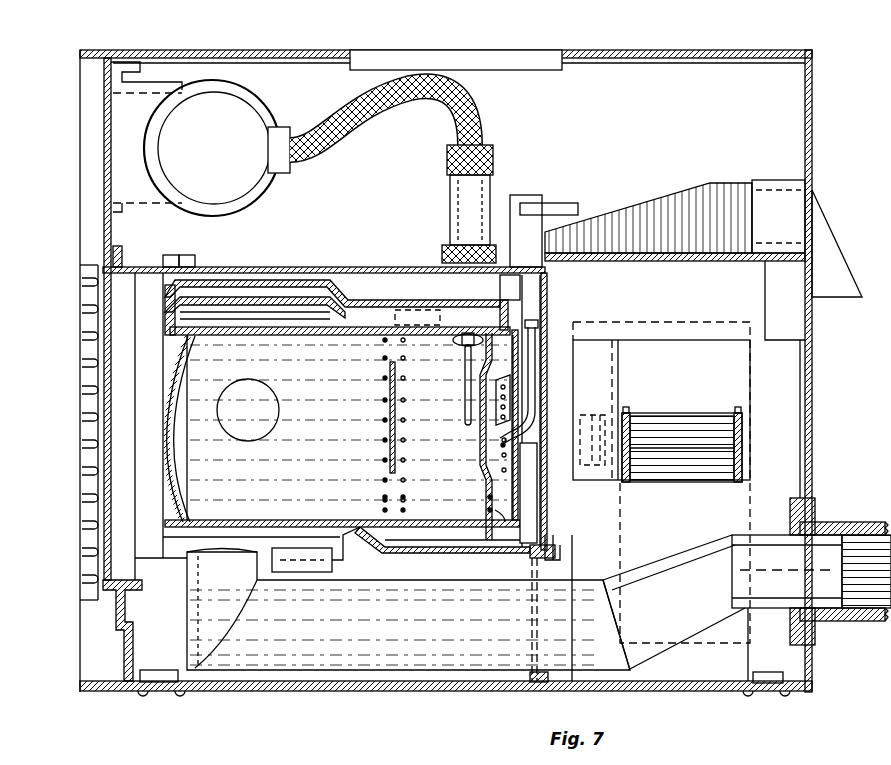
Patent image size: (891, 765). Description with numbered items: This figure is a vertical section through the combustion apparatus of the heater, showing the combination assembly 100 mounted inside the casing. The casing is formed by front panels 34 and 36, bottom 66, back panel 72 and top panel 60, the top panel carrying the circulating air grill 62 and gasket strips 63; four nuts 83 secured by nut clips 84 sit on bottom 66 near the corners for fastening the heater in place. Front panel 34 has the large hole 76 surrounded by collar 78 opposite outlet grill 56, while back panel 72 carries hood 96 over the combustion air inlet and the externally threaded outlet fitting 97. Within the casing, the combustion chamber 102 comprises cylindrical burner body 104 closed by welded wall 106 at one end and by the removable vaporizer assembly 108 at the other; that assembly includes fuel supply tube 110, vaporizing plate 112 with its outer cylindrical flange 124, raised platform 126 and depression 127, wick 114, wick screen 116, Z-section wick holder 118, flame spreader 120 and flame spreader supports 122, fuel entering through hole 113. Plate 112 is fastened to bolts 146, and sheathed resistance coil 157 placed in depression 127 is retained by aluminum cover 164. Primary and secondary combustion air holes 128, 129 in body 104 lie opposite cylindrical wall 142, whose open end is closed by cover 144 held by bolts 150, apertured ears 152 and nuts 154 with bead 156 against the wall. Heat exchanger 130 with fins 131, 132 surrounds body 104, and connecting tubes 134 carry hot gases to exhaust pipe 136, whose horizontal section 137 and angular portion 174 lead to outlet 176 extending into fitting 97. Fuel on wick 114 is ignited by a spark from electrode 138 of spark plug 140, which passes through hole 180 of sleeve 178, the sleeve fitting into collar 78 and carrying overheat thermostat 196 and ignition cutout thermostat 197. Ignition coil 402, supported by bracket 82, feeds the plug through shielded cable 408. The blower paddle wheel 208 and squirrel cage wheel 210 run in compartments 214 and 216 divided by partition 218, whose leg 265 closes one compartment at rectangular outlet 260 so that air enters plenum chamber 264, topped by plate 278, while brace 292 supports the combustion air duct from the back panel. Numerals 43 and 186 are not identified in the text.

The front panel 34 is at (104, 157).
The front panel 36 is at (132, 656).
The control box 43 is at (338, 548).
The outlet grill 56 is at (93, 593).
The top panel 60 is at (235, 50).
The circulating air grill 62 is at (448, 60).
The gasket strips 63 is at (80, 66).
The bottom 66 is at (270, 693).
The back panel 72 is at (808, 382).
The large hole 76 is at (82, 272).
The collar 78 is at (120, 248).
The ignition coil bracket 82 is at (152, 84).
The nuts 83 is at (775, 673).
The nut clips 84 is at (788, 698).
The hood 96 is at (847, 262).
The flanged outlet fitting 97 is at (832, 520).
The combination assembly 100 is at (378, 267).
The combustion chamber 102 is at (359, 303).
The burner body 104 is at (281, 335).
The welded wall 106 is at (185, 368).
The vaporizer assembly 108 is at (556, 477).
The fuel supply tube 110 is at (548, 330).
The vaporizing plate 112 is at (520, 287).
The hole 113 is at (488, 432).
The wick 114 is at (495, 412).
The wick screen 116 is at (470, 380).
The wick holder 118 is at (490, 470).
The flame spreader 120 is at (388, 447).
The flame spreader supports 122 is at (450, 318).
The outer cylindrical flange 124 is at (462, 553).
The raised platform 126 is at (458, 450).
The depression 127 is at (507, 382).
The primary combustion air holes 128 is at (490, 504).
The secondary combustion air holes 129 is at (390, 365).
The heat exchanger 130 is at (282, 297).
The fins 131 is at (175, 320).
The fins 132 is at (238, 280).
The connecting tubes 134 is at (254, 438).
The exhaust pipe 136 is at (192, 607).
The horizontal section 137 is at (305, 648).
The electrode 138 is at (465, 420).
The spark plug 140 is at (458, 203).
The cylindrical wall 142 is at (418, 553).
The cover 144 is at (548, 503).
The bolts 146 is at (505, 522).
The bolts 150 is at (533, 565).
The apertured ears 152 is at (550, 538).
The nuts 154 is at (556, 556).
The bead 156 is at (540, 552).
The sheathed resistance coil 157 is at (507, 392).
The aluminum cover 164 is at (682, 444).
The angular portion 174 is at (686, 615).
The outlet 176 is at (796, 590).
The sleeve 178 is at (330, 280).
The hole 180 is at (438, 262).
The opening 186 is at (388, 418).
The overheat thermostat 196 is at (193, 262).
The ignition cutout thermostat 197 is at (162, 262).
The paddle wheel 208 is at (608, 400).
The squirrel cage wheel 210 is at (710, 468).
The compartment 214 is at (724, 376).
The compartment 216 is at (610, 412).
The partition 218 is at (612, 386).
The rectangular outlet 260 is at (672, 340).
The plenum chamber 264 is at (790, 442).
The leg 265 is at (603, 345).
The plate 278 is at (600, 232).
The brace 292 is at (565, 204).
The ignition coil 402 is at (247, 107).
The shielded cable 408 is at (358, 126).